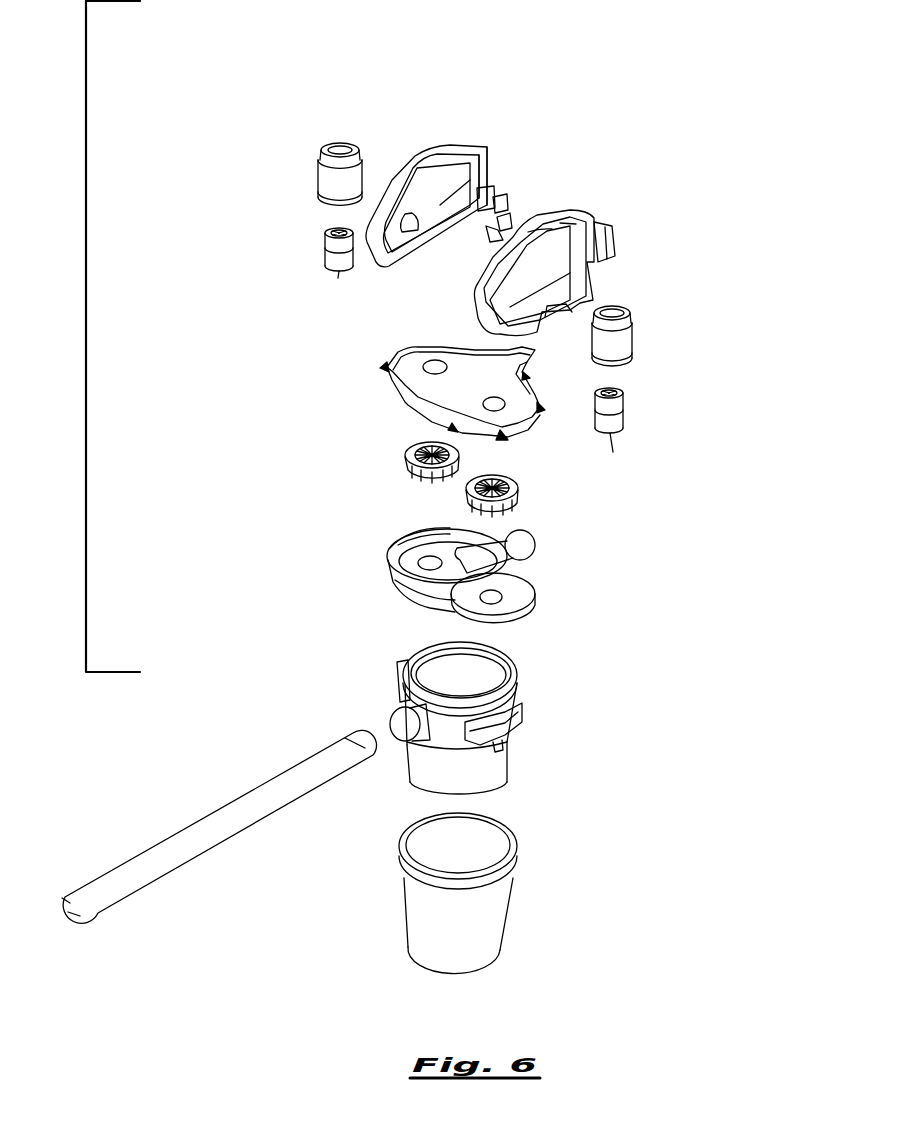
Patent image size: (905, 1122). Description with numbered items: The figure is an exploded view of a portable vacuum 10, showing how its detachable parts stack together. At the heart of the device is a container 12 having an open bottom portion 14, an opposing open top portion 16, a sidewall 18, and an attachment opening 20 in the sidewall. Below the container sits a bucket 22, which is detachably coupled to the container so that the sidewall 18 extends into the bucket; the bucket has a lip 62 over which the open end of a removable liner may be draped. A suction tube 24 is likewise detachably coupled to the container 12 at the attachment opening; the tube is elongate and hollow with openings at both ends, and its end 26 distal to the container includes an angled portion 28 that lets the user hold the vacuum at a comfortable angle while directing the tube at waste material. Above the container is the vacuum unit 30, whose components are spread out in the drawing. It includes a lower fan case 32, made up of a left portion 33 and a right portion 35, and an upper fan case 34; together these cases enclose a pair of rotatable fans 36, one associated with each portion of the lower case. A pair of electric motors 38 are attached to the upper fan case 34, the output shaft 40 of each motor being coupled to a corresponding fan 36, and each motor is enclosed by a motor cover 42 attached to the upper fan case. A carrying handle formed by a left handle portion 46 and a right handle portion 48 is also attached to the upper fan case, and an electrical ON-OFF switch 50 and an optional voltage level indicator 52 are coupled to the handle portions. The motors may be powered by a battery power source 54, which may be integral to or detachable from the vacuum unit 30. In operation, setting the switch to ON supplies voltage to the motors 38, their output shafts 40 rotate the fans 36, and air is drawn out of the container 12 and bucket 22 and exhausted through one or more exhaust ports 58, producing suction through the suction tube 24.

The portable vacuum 10 is at (806, 221).
The container 12 is at (493, 717).
The open bottom portion 14 is at (485, 787).
The open top portion 16 is at (481, 667).
The sidewall 18 is at (508, 758).
The attachment opening 20 is at (392, 714).
The bucket 22 is at (479, 891).
The suction tube 24 is at (270, 775).
The end of suction tube 26 is at (57, 900).
The angled portion 28 is at (70, 913).
The vacuum unit 30 is at (86, 332).
The lower fan case 32 is at (429, 581).
The left portion 33 is at (388, 553).
The upper fan case 34 is at (399, 409).
The right portion 35 is at (537, 598).
The rotatable fans 36 is at (398, 476).
The electric motors 38 is at (316, 255).
The output shaft 40 is at (338, 272).
The motor cover 42 is at (318, 165).
The left handle portion 46 is at (442, 144).
The right handle portion 48 is at (592, 193).
The electrical ON-OFF switch 50 is at (492, 233).
The voltage level indicator 52 is at (505, 198).
The battery power source 54 is at (615, 228).
The exhaust ports 58 is at (528, 546).
The lip 62 is at (398, 845).